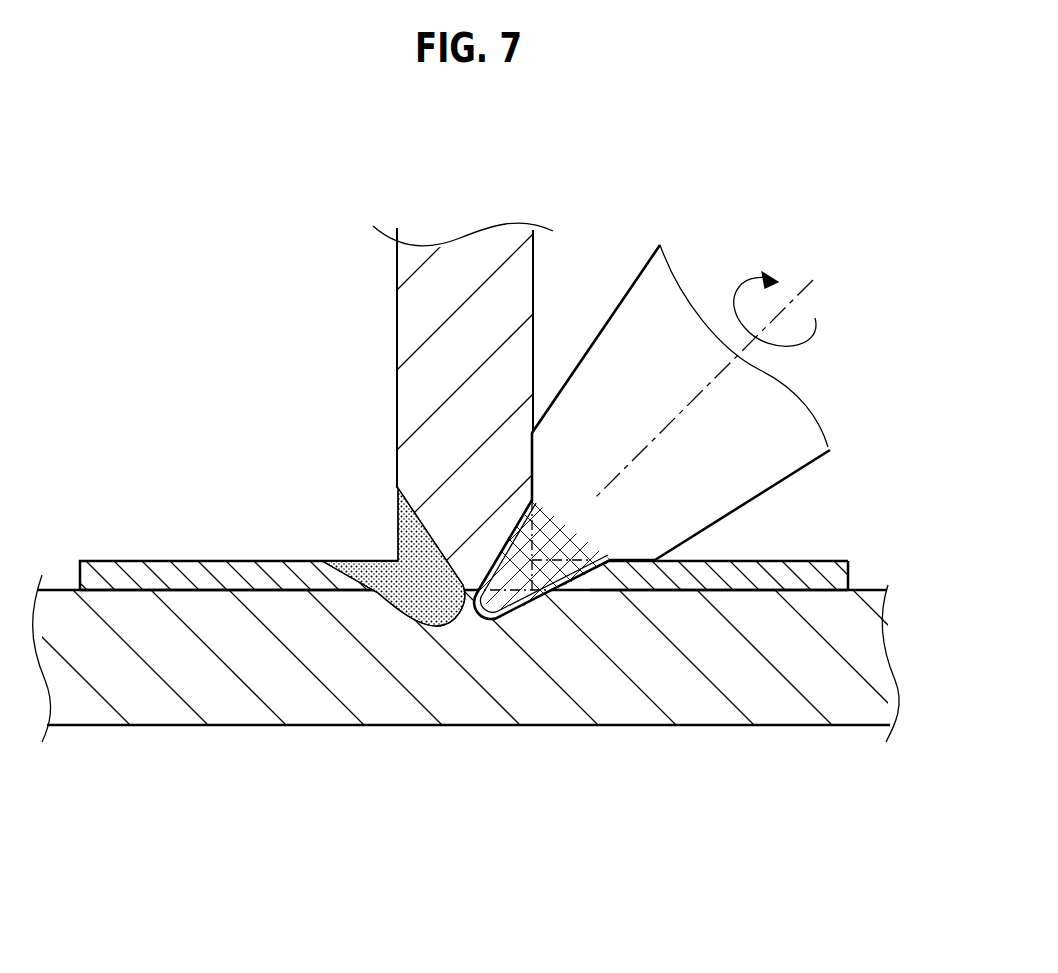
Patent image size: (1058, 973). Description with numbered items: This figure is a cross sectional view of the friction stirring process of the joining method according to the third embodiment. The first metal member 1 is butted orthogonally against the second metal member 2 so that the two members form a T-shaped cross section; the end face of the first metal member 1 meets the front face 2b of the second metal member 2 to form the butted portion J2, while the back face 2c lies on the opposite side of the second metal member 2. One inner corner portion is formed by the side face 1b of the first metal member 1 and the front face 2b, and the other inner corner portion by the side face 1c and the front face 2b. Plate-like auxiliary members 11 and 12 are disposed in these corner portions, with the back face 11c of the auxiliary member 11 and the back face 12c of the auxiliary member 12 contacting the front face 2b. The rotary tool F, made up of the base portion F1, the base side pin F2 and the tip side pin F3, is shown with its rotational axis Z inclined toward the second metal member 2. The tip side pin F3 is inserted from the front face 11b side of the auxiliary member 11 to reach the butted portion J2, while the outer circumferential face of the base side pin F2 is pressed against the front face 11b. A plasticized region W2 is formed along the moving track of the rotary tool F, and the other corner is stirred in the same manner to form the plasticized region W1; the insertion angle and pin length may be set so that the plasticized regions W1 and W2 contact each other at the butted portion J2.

The first metal member 1 is at (485, 382).
The side face 1b is at (562, 239).
The side face 1c is at (397, 346).
The second metal member 2 is at (494, 688).
The front face 2b is at (869, 590).
The back face 2c is at (851, 726).
The auxiliary member 11 is at (741, 639).
The front face 11b is at (827, 562).
The back face 11c is at (768, 592).
The auxiliary member 12 is at (228, 672).
The back face 12c is at (267, 593).
The butted portion J2 is at (462, 582).
The plasticized region W1 is at (407, 617).
The plasticized region W2 is at (523, 606).
The rotary tool F is at (667, 437).
The base portion F1 is at (755, 453).
The base side pin F2 is at (597, 533).
The tip side pin F3 is at (541, 534).
The rotational axis Z is at (710, 376).